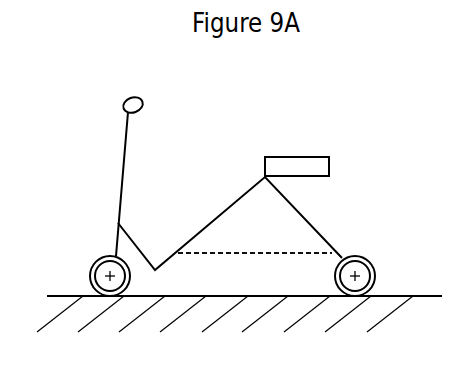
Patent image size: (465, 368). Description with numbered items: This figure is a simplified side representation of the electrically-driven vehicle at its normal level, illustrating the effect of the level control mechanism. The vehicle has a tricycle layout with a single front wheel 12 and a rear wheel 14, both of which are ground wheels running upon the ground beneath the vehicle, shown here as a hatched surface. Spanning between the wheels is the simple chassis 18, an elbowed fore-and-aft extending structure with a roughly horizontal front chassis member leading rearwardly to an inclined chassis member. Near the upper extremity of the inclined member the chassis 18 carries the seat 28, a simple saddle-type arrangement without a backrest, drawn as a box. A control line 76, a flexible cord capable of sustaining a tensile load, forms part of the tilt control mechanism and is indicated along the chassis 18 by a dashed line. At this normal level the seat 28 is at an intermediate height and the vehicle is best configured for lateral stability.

The front wheel 12 is at (98, 277).
The rear wheel 14 is at (359, 260).
The chassis 18 is at (208, 223).
The seat 28 is at (295, 157).
The control line 76 is at (263, 252).